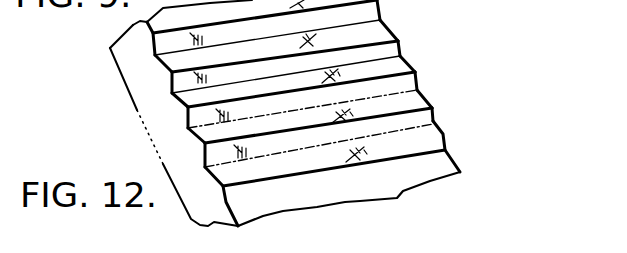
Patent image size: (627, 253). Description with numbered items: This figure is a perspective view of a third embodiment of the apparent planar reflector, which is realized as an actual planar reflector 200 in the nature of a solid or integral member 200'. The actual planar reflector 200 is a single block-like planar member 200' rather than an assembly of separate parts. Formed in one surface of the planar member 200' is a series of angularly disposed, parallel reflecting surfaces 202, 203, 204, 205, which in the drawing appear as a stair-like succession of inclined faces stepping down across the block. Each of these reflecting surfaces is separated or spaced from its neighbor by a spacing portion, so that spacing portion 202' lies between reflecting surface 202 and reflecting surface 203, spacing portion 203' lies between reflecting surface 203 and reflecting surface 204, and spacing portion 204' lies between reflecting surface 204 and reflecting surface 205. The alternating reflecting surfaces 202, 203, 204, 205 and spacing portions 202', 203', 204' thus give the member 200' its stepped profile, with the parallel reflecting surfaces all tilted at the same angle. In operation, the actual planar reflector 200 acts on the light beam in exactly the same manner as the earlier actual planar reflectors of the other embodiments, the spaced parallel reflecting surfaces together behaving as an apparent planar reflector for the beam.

The actual planar reflector 200 is at (234, 113).
The solid or integral member 200' is at (344, 113).
The reflecting surface 202 is at (325, 36).
The spacing portion 202' is at (336, 52).
The reflecting surface 203 is at (352, 69).
The spacing portion 203' is at (363, 91).
The reflecting surface 204 is at (380, 110).
The spacing portion 204' is at (392, 135).
The reflecting surface 205 is at (425, 140).